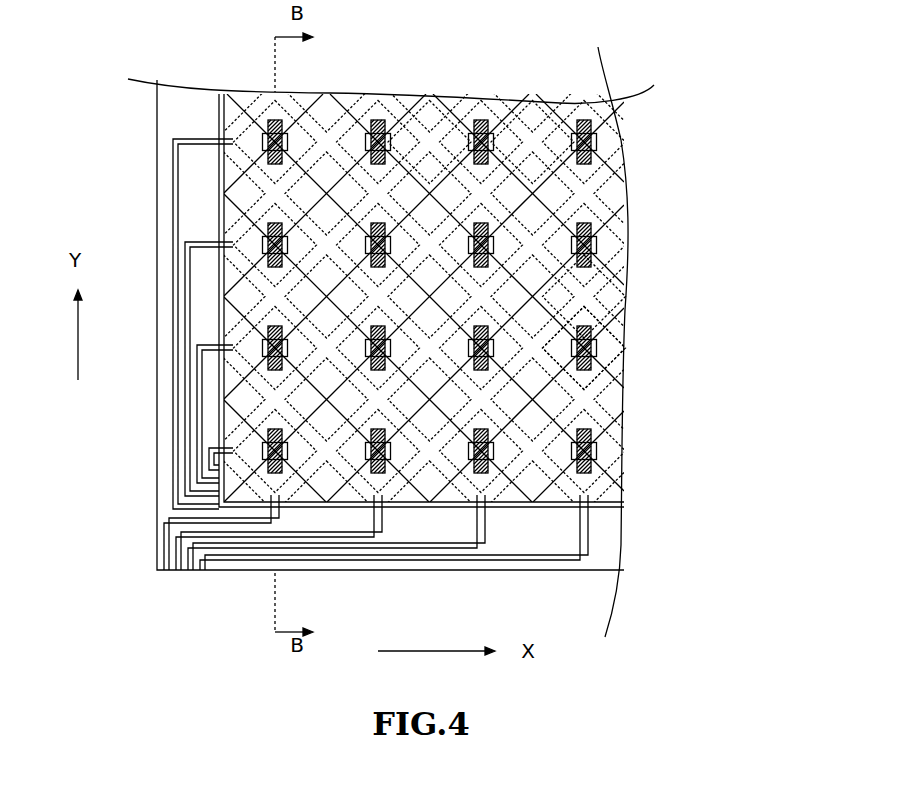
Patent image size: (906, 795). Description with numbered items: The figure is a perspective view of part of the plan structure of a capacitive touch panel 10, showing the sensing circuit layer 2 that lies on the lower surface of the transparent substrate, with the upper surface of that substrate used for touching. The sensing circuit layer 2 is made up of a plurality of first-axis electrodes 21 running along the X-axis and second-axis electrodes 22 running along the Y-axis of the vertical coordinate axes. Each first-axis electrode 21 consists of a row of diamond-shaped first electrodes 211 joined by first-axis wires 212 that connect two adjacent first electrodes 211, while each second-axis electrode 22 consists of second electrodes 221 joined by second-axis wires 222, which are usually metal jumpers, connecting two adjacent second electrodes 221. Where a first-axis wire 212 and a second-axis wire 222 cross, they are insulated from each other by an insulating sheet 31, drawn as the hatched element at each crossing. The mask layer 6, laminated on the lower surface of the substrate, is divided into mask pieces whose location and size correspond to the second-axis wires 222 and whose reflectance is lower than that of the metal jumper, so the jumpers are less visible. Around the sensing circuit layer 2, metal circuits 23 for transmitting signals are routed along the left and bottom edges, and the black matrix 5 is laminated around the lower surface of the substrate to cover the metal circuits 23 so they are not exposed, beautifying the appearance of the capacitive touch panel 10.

The sensing circuit layer 2 is at (537, 35).
The black matrix 5 is at (183, 117).
The mask layer 6 is at (593, 113).
The capacitive touch panel 10 is at (720, 146).
The first-axis electrode 21 is at (440, 296).
The second-axis electrode 22 is at (500, 293).
The metal circuits 23 is at (175, 185).
The insulating sheet 31 is at (600, 457).
The first electrode 211 is at (433, 145).
The first-axis wire 212 is at (500, 137).
The second electrode 221 is at (596, 296).
The second-axis wire 222 is at (598, 357).